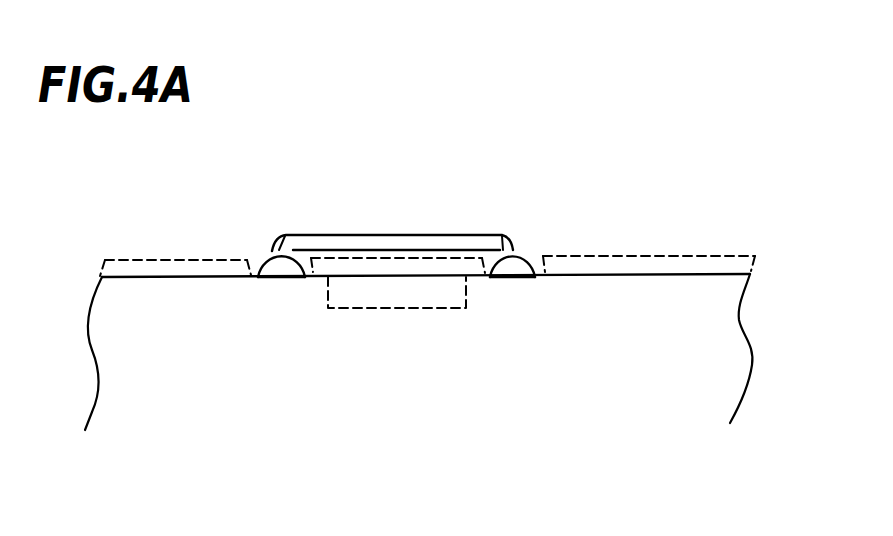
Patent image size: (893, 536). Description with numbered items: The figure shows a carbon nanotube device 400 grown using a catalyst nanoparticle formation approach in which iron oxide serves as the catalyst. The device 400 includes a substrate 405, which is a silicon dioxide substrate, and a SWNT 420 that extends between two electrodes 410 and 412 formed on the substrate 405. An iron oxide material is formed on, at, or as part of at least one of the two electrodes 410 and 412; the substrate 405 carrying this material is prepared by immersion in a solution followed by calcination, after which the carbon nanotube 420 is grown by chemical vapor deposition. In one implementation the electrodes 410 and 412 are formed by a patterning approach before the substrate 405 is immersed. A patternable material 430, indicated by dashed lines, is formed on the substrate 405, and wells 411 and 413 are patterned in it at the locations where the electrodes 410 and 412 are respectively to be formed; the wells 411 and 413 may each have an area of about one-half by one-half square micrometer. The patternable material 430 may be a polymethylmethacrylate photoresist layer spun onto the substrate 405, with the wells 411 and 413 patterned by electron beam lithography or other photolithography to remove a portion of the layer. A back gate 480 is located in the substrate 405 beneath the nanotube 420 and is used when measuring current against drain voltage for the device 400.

The carbon nanotube device 400 is at (697, 125).
The substrate 405 is at (664, 390).
The electrode 410 is at (272, 258).
The well 411 is at (273, 281).
The electrode 412 is at (518, 258).
The well 413 is at (513, 278).
The SWNT 420 is at (413, 240).
The patternable material 430 is at (718, 256).
The back gate 480 is at (385, 295).